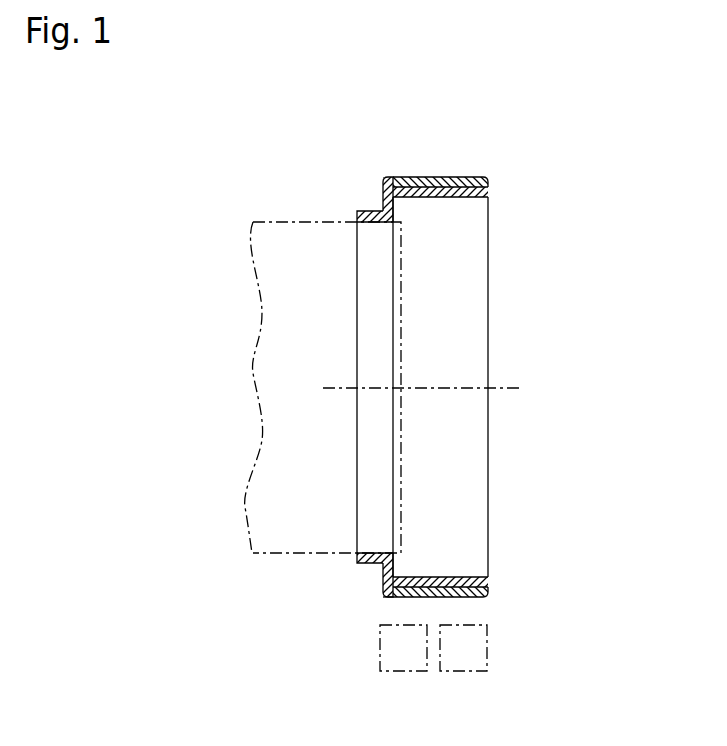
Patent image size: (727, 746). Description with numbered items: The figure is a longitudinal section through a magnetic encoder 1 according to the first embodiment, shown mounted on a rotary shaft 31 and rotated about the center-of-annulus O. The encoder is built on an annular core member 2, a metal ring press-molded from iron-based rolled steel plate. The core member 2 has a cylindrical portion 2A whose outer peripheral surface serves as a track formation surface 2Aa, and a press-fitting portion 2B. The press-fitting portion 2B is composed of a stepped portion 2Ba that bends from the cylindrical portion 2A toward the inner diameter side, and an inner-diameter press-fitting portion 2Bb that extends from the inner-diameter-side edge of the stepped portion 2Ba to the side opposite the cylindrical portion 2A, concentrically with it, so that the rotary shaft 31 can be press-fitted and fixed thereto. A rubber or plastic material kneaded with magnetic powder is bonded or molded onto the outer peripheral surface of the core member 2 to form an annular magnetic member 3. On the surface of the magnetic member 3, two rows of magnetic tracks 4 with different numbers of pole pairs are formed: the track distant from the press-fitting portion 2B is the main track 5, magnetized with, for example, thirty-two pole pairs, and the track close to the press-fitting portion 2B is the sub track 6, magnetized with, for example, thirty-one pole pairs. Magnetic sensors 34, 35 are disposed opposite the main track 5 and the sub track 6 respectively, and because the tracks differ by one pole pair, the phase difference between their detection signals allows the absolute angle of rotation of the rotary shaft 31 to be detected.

The magnetic encoder 1 is at (519, 174).
The core member 2 is at (455, 560).
The cylindrical portion 2A is at (447, 196).
The track formation surface 2Aa is at (487, 177).
The press-fitting portion 2B is at (250, 80).
The stepped portion 2Ba is at (383, 207).
The inner-diameter press-fitting portion 2Bb is at (357, 237).
The magnetic member 3 is at (462, 597).
The magnetic tracks 4 is at (488, 137).
The main track 5 is at (487, 170).
The sub track 6 is at (435, 170).
The rotary shaft 31 is at (288, 542).
The magnetic sensor 34 is at (455, 660).
The magnetic sensor 35 is at (390, 648).
The center-of-annulus O is at (503, 388).